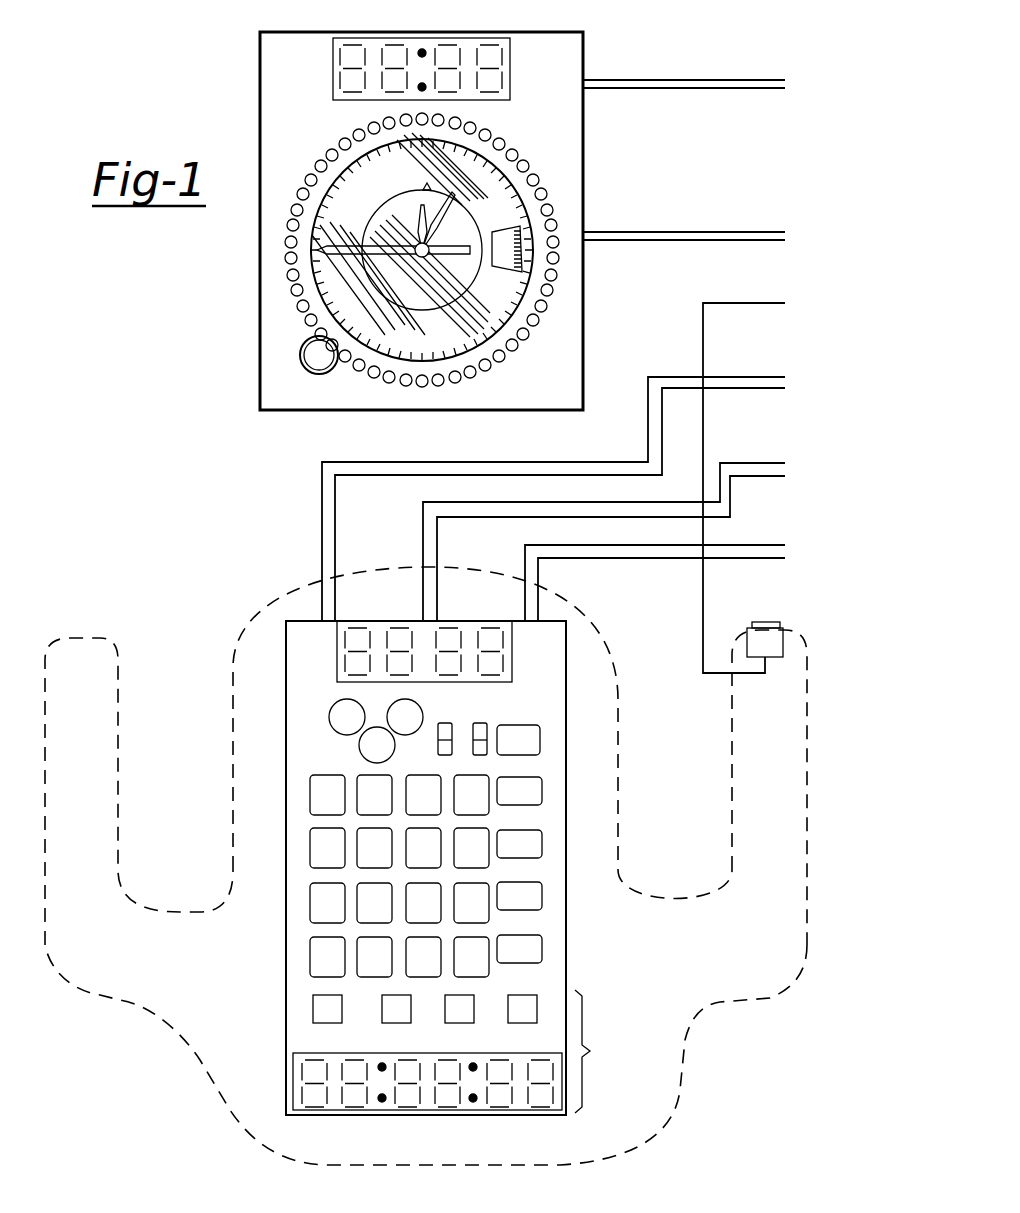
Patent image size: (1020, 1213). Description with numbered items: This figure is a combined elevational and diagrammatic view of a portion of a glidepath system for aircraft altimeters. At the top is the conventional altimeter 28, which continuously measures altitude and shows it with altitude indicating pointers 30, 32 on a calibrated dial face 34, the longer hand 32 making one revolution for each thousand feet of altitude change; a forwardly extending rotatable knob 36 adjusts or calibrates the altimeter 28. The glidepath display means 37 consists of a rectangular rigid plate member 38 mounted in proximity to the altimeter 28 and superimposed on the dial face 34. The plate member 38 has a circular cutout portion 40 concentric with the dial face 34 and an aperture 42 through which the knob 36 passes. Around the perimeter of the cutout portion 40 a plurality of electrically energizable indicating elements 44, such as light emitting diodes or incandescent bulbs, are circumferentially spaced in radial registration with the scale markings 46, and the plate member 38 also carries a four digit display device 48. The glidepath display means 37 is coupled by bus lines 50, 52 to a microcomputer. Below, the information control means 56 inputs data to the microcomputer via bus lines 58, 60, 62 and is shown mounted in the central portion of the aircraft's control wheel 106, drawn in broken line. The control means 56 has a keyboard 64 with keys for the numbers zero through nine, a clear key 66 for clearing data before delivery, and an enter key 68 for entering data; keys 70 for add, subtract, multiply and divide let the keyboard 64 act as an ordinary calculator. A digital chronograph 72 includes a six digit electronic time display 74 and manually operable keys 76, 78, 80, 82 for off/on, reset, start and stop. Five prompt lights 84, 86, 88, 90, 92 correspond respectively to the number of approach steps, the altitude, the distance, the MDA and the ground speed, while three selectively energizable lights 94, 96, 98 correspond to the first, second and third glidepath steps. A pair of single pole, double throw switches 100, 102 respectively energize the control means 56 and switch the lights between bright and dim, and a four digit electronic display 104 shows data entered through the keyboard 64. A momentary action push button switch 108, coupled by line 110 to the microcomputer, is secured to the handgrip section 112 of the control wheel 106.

The altimeter 28 is at (457, 163).
The altitude indicating pointer 30 is at (458, 213).
The altitude indicating pointer 32 is at (386, 255).
The calibrated dial face 34 is at (393, 225).
The rotatable knob 36 is at (300, 358).
The glidepath display means 37 is at (250, 57).
The plate member 38 is at (585, 306).
The circular cutout portion 40 is at (312, 295).
The aperture 42 is at (322, 375).
The indicating elements 44 is at (328, 162).
The scale markings 46 is at (496, 264).
The display device 48 is at (470, 38).
The bus line 50 is at (686, 80).
The bus line 52 is at (686, 232).
The information control means 56 is at (268, 912).
The bus line 58 is at (465, 462).
The bus line 60 is at (538, 502).
The bus line 62 is at (612, 547).
The keyboard 64 is at (287, 806).
The clear key 66 is at (310, 958).
The enter key 68 is at (425, 977).
The keys 70 is at (489, 808).
The digital chronograph 72 is at (435, 1055).
The six digit electronic time display 74 is at (400, 1112).
The manually operable key 76 is at (313, 1005).
The manually operable key 78 is at (382, 1005).
The manually operable key 80 is at (472, 997).
The manually operable key 82 is at (530, 1000).
The prompt light 84 is at (540, 741).
The prompt light 86 is at (542, 791).
The prompt light 88 is at (542, 845).
The prompt light 90 is at (542, 896).
The prompt light 92 is at (542, 949).
The selectively energizable light 94 is at (332, 706).
The selectively energizable light 96 is at (392, 708).
The selectively energizable light 98 is at (396, 745).
The single pole double throw switch 100 is at (445, 723).
The single pole double throw switch 102 is at (482, 723).
The four digit electronic display 104 is at (378, 621).
The control wheel 106 is at (203, 1098).
The push button switch 108 is at (762, 622).
The line 110 is at (703, 339).
The handgrip section 112 is at (732, 735).